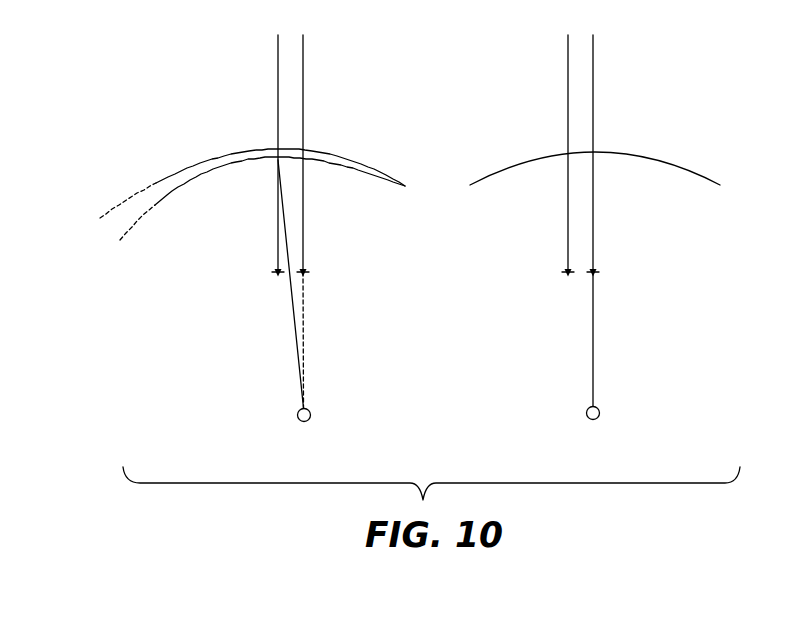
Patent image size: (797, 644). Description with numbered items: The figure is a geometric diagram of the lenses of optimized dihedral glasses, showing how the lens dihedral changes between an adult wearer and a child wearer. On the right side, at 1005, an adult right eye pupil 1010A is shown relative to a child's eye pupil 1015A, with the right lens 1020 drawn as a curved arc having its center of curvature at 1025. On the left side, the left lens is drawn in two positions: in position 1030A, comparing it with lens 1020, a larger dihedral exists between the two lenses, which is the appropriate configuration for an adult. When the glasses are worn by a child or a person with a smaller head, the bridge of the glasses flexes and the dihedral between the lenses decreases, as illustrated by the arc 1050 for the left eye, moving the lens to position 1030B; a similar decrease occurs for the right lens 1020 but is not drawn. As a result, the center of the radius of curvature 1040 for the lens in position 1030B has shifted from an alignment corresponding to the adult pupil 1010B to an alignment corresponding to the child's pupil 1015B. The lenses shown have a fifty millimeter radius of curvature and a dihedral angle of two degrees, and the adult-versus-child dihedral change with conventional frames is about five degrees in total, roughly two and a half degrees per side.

The adult eye configuration 1005 is at (598, 243).
The adult right eye pupil 1010A is at (609, 272).
The adult pupil 1010B is at (262, 272).
The child's eye pupil 1015A is at (552, 272).
The child's pupil 1015B is at (320, 272).
The lens 1020 is at (670, 151).
The center of curvature 1025 is at (611, 413).
The lens in adult position 1030A is at (335, 150).
The lens in child position 1030B is at (336, 180).
The center of the radius of curvature 1040 is at (287, 416).
The dihedral decrease 1050 is at (114, 234).